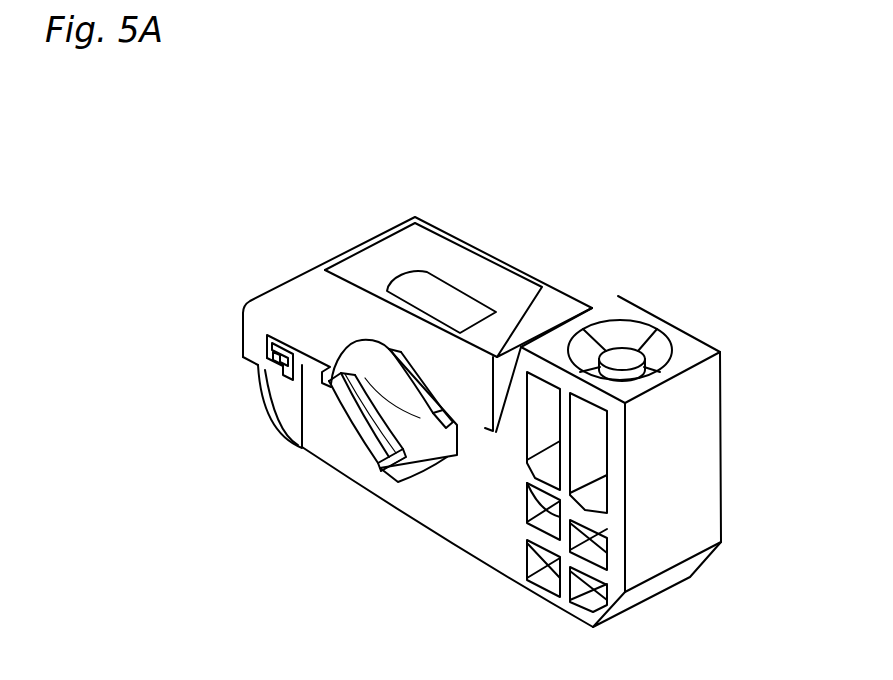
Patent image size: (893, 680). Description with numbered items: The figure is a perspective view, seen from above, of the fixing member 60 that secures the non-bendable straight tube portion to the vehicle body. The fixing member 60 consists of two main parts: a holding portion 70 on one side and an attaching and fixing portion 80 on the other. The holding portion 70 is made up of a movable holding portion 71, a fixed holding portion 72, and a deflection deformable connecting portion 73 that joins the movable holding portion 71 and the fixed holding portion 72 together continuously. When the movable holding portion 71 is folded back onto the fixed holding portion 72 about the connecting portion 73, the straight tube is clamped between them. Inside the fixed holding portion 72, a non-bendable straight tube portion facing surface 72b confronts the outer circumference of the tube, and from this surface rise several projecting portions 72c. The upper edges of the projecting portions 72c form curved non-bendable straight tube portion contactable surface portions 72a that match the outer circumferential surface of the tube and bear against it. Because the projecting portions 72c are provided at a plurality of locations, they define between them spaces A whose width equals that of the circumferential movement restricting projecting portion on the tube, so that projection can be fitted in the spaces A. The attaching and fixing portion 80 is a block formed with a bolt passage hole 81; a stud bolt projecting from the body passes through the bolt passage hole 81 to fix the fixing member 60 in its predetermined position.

The fixing member 60 is at (449, 378).
The holding portion 70 is at (355, 378).
The movable holding portion 71 is at (418, 279).
The fixed holding portion 72 is at (287, 475).
The non-bendable straight tube portion contactable surface portion 72a is at (338, 466).
The non-bendable straight tube portion facing surface 72b is at (269, 410).
The projecting portion 72c is at (332, 451).
The deflection deformable connecting portion 73 is at (254, 367).
The attaching and fixing portion 80 is at (638, 443).
The bolt passage hole 81 is at (620, 320).
The space A is at (384, 512).